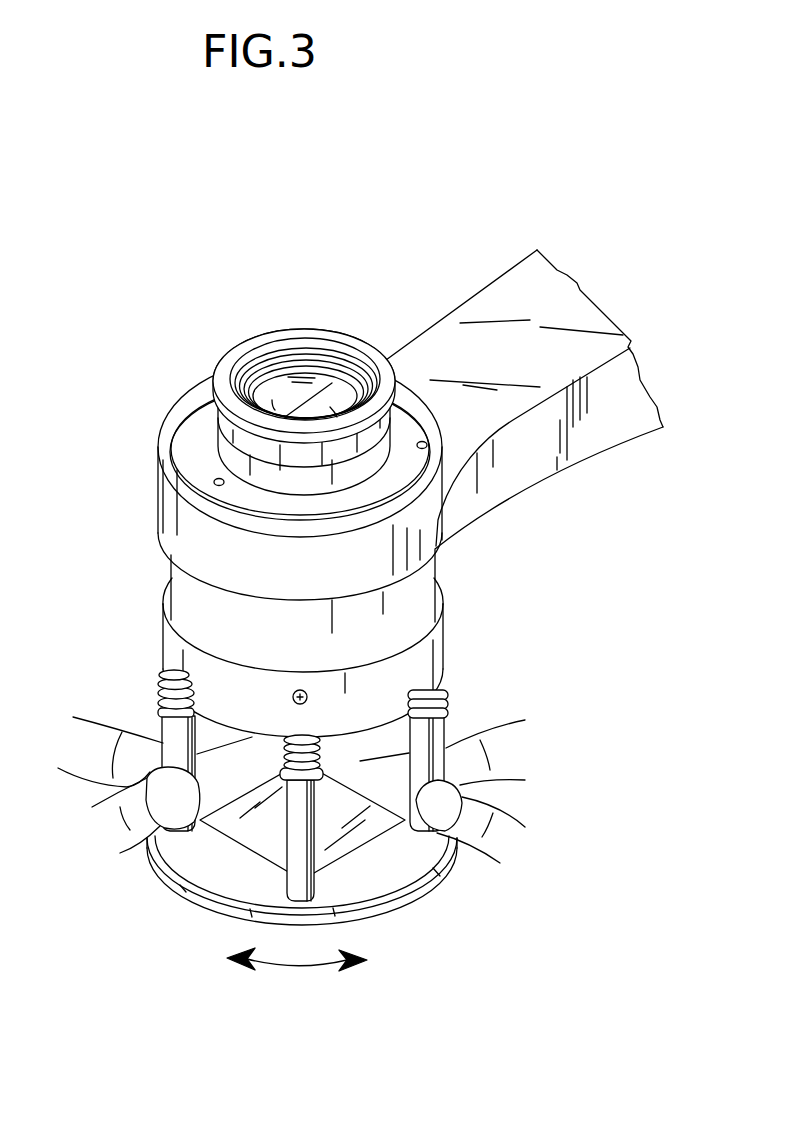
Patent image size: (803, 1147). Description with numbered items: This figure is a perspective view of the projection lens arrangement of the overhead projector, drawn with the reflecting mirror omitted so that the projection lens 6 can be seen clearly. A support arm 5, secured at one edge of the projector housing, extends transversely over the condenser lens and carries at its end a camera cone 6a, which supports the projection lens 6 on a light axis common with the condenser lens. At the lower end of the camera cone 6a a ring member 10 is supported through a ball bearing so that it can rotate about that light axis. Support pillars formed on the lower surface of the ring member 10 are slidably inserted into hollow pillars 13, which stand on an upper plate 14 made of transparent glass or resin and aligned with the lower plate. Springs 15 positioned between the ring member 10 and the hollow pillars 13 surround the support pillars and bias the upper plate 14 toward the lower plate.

The support arm 5 is at (583, 465).
The projection lens 6 is at (277, 422).
The camera cone 6a is at (195, 595).
The ring member 10 is at (433, 645).
The hollow pillars 13 is at (170, 733).
The upper plate 14 is at (200, 875).
The springs 15 is at (444, 690).